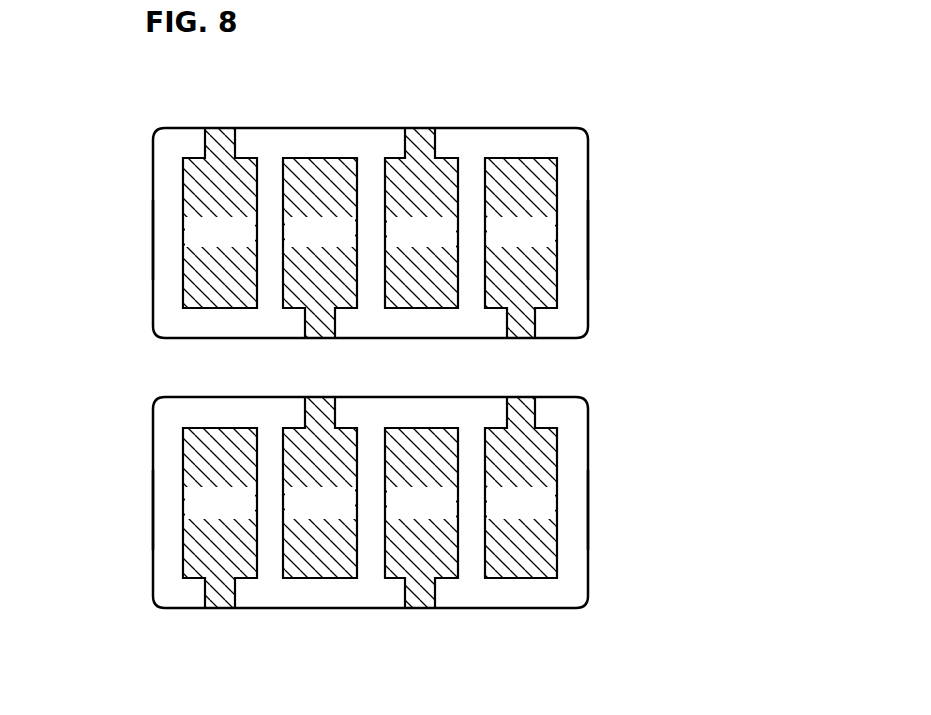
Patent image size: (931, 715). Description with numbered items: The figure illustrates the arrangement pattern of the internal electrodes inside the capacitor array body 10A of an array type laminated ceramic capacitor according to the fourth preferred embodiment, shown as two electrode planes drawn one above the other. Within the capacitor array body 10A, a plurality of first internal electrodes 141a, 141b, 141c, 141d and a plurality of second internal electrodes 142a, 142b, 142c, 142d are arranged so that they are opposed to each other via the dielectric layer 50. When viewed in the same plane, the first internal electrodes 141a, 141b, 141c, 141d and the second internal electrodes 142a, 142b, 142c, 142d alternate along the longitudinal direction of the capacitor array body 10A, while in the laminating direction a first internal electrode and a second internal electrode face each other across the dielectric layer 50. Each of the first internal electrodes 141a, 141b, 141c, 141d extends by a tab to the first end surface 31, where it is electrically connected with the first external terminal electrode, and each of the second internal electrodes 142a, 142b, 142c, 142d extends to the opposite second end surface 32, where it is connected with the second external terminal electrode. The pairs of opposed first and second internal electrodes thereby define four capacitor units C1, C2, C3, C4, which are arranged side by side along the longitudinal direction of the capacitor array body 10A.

The capacitor array body 10A is at (606, 152).
The first end surface 31 is at (258, 128).
The second end surface 32 is at (350, 338).
The dielectric layer 50 is at (590, 232).
The first internal electrode 141a is at (183, 207).
The first internal electrode 141b is at (320, 578).
The first internal electrode 141c is at (401, 158).
The first internal electrode 141d is at (522, 578).
The second internal electrode 142a is at (204, 606).
The second internal electrode 142b is at (323, 158).
The second internal electrode 142c is at (408, 594).
The second internal electrode 142d is at (529, 158).
The capacitor unit C1 is at (218, 312).
The capacitor unit C2 is at (298, 312).
The capacitor unit C3 is at (420, 312).
The capacitor unit C4 is at (498, 312).